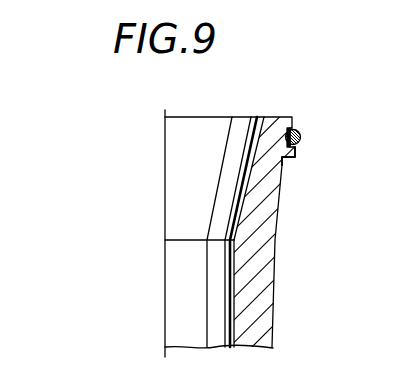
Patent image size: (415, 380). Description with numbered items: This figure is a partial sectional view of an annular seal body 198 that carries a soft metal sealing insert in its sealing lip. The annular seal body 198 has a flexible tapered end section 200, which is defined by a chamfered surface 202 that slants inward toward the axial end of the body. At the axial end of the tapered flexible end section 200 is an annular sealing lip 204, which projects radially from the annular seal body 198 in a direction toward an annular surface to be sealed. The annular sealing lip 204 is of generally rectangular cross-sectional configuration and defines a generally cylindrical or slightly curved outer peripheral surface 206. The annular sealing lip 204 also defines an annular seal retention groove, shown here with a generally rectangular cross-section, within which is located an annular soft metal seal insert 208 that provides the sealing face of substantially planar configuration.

The annular seal body 198 is at (247, 303).
The flexible tapered end section 200 is at (278, 200).
The chamfered surface 202 is at (250, 168).
The annular sealing lip 204 is at (292, 116).
The outer peripheral surface 206 is at (300, 155).
The annular soft metal seal insert 208 is at (303, 136).